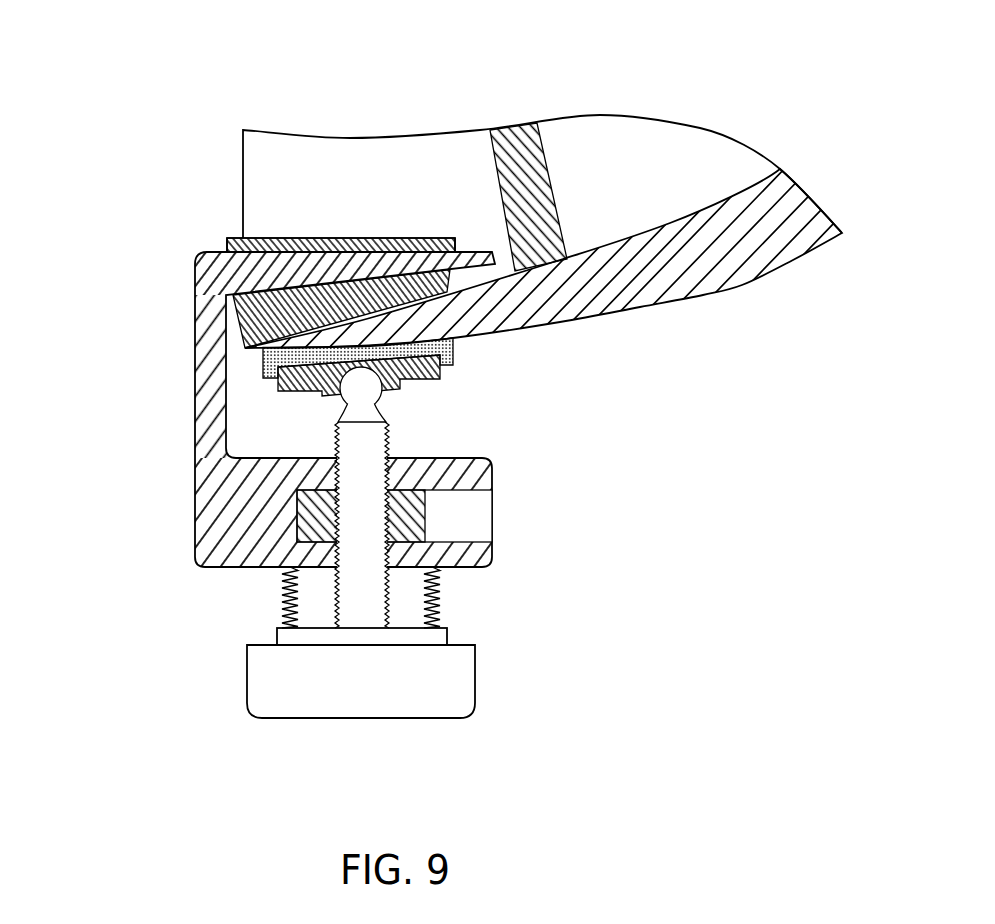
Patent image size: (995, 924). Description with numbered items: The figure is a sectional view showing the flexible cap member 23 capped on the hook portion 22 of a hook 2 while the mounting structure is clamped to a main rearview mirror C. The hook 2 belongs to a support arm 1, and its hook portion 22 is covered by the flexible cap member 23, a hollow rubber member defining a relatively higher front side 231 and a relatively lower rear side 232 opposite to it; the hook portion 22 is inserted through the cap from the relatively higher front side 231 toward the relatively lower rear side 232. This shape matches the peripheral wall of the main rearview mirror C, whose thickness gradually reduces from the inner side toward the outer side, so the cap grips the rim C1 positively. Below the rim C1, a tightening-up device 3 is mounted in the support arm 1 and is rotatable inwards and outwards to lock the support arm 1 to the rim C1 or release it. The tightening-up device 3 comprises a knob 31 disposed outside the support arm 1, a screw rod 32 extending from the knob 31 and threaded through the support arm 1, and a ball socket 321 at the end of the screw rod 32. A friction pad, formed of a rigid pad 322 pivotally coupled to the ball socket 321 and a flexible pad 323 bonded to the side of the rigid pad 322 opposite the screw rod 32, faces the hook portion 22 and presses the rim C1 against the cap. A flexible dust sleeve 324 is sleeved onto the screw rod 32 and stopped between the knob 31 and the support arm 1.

The support arm 1 is at (498, 560).
The hook 2 is at (330, 240).
The hook portion 22 is at (390, 257).
The flexible cap member 23 is at (248, 308).
The relatively higher front side 231 is at (242, 237).
The relatively lower rear side 232 is at (443, 243).
The tightening-up device 3 is at (307, 718).
The knob 31 is at (413, 672).
The screw rod 32 is at (393, 437).
The ball socket 321 is at (355, 385).
The rigid pad 322 is at (263, 373).
The flexible pad 323 is at (457, 348).
The flexible dust sleeve 324 is at (288, 612).
The main rearview mirror C is at (633, 162).
The rim C1 is at (233, 350).